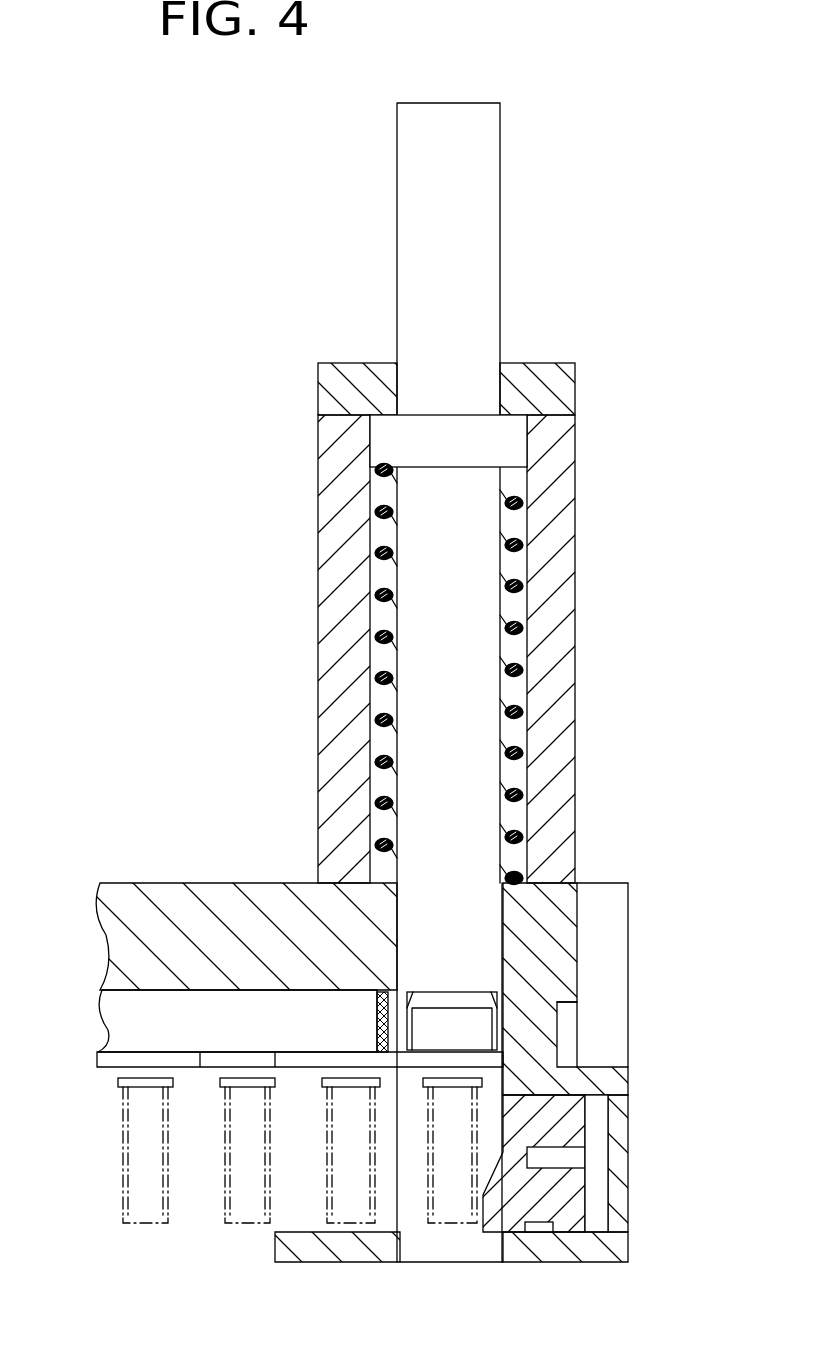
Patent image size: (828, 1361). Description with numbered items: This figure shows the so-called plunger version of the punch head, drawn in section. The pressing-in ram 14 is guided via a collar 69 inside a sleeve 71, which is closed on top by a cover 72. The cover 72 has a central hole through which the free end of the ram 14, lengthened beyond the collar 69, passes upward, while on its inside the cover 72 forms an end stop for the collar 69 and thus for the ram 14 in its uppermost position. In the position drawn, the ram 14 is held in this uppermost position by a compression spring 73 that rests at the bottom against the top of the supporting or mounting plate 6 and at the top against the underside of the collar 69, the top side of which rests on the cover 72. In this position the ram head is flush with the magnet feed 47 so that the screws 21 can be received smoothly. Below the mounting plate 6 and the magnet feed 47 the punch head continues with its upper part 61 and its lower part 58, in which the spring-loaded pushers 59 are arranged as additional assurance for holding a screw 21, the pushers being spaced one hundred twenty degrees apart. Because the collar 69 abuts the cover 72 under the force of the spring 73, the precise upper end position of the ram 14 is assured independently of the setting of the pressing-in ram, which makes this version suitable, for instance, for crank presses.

The ram 14 is at (472, 190).
The cover 72 is at (524, 383).
The sleeve 71 is at (552, 650).
The collar 69 is at (500, 447).
The compression spring 73 is at (517, 795).
The supporting or mounting plate 6 is at (203, 912).
The magnet feed 47 is at (125, 1022).
The screws 21 is at (153, 1200).
The upper part of the punch head 61 is at (552, 952).
The spring-loaded pushers 59 is at (548, 1120).
The punch-head lower part 58 is at (603, 1240).